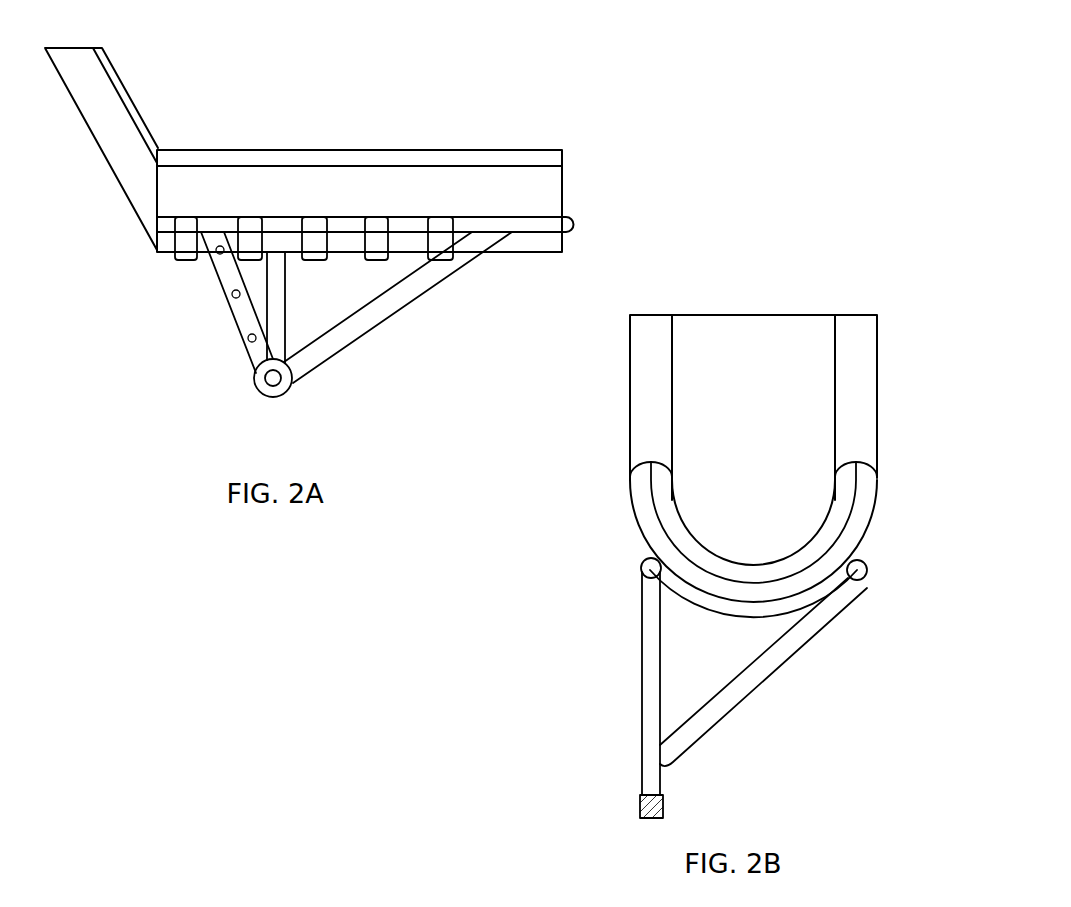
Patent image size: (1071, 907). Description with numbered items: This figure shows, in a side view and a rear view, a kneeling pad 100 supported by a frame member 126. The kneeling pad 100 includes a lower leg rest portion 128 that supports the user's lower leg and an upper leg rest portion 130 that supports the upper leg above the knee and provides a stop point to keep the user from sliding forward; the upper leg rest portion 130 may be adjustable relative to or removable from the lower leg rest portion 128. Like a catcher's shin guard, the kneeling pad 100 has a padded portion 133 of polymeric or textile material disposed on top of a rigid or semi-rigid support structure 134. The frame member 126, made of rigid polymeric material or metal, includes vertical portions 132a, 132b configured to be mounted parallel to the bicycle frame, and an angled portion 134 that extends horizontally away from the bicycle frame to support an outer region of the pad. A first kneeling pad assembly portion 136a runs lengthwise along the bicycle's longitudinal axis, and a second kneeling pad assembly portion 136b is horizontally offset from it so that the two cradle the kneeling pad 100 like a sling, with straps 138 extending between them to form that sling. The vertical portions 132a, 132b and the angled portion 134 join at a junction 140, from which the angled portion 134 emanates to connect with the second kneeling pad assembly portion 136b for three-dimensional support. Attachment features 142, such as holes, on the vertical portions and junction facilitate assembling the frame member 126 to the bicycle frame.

In FIG. 2A, the kneeling pad 100 is at (358, 237).
In FIG. 2B, the kneeling pad 100 is at (753, 566).
In FIG. 2A, the frame member 126 is at (324, 333).
In FIG. 2B, the frame member 126 is at (706, 645).
In FIG. 2A, the lower leg rest portion 128 is at (393, 181).
In FIG. 2A, the upper leg rest portion 130 is at (159, 94).
In FIG. 2A, the vertical portion 132a is at (240, 332).
In FIG. 2A, the vertical portion 132b is at (360, 337).
In FIG. 2B, the vertical portion 132b is at (642, 657).
In FIG. 2B, the padded portion 133 is at (676, 503).
In FIG. 2A, the angled portion 134 is at (285, 310).
In FIG. 2B, the angled portion 134 is at (630, 488).
In FIG. 2A, the first kneeling pad assembly portion 136a is at (573, 225).
In FIG. 2B, the first kneeling pad assembly portion 136a is at (639, 565).
In FIG. 2B, the second kneeling pad assembly portion 136b is at (870, 570).
In FIG. 2A, the strap 138 is at (192, 258).
In FIG. 2B, the strap 138 is at (688, 604).
In FIG. 2A, the junction 140 is at (253, 388).
In FIG. 2B, the junction 140 is at (641, 773).
In FIG. 2A, the attachment feature 142 is at (248, 340).